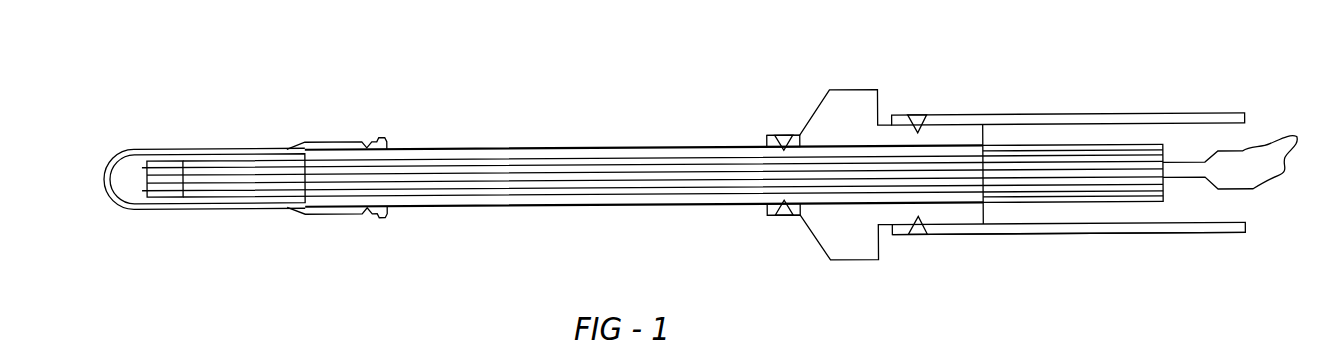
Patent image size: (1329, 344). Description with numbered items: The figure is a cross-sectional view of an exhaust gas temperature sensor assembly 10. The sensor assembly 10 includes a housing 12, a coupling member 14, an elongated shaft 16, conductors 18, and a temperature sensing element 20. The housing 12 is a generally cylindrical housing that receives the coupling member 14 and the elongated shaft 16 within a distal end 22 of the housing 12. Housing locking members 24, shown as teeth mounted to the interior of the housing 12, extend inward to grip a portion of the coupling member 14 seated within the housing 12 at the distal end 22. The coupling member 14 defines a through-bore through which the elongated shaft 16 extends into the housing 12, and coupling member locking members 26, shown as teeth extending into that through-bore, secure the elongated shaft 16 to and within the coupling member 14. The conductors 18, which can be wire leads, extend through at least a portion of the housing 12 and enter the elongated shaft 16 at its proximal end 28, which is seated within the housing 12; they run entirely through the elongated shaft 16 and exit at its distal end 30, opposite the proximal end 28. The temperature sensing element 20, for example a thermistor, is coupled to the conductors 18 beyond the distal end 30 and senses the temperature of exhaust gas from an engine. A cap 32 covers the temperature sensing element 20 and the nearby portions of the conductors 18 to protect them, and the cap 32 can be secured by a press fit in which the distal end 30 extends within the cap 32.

The sensor assembly 10 is at (598, 55).
The housing 12 is at (1223, 236).
The coupling member 14 is at (856, 104).
The elongated shaft 16 is at (566, 206).
The conductors 18 is at (1286, 146).
The temperature sensing element 20 is at (150, 179).
The distal end of the housing 22 is at (972, 237).
The housing locking members 24 is at (920, 233).
The coupling member locking members 26 is at (783, 212).
The proximal end of the elongated shaft 28 is at (1147, 146).
The distal end of the elongated shaft 30 is at (326, 146).
The cap 32 is at (114, 154).